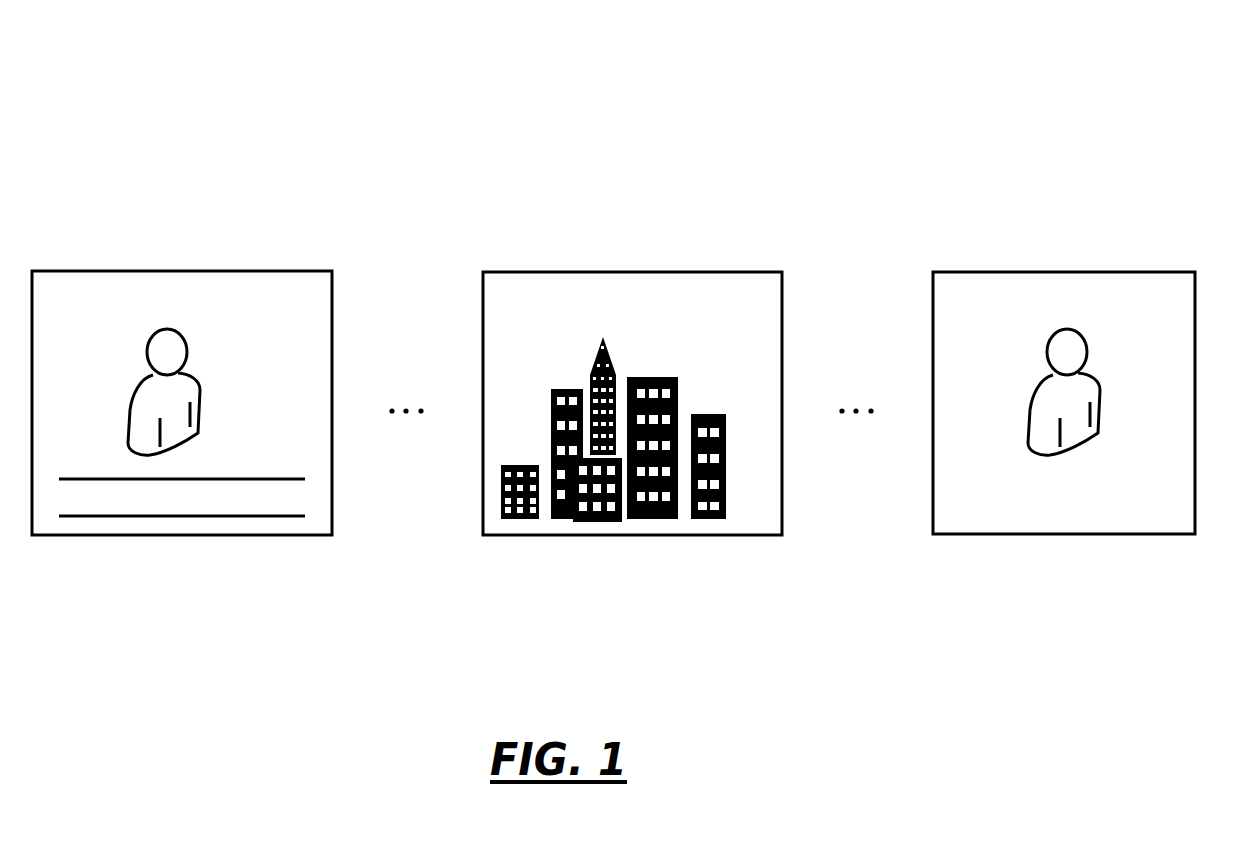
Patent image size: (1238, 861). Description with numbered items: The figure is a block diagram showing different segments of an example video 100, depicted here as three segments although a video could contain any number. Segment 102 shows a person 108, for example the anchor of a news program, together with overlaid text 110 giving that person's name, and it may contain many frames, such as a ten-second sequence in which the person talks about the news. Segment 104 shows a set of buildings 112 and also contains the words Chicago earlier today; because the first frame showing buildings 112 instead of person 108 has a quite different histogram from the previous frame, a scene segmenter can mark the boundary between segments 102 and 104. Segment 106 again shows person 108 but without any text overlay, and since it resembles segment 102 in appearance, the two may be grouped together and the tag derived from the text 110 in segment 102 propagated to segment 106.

The video 100 is at (912, 112).
The segment 102 is at (257, 271).
The segment 104 is at (707, 272).
The segment 106 is at (1120, 272).
The person 108 is at (145, 310).
The overlaid text 110 is at (275, 505).
The set of buildings 112 is at (743, 502).